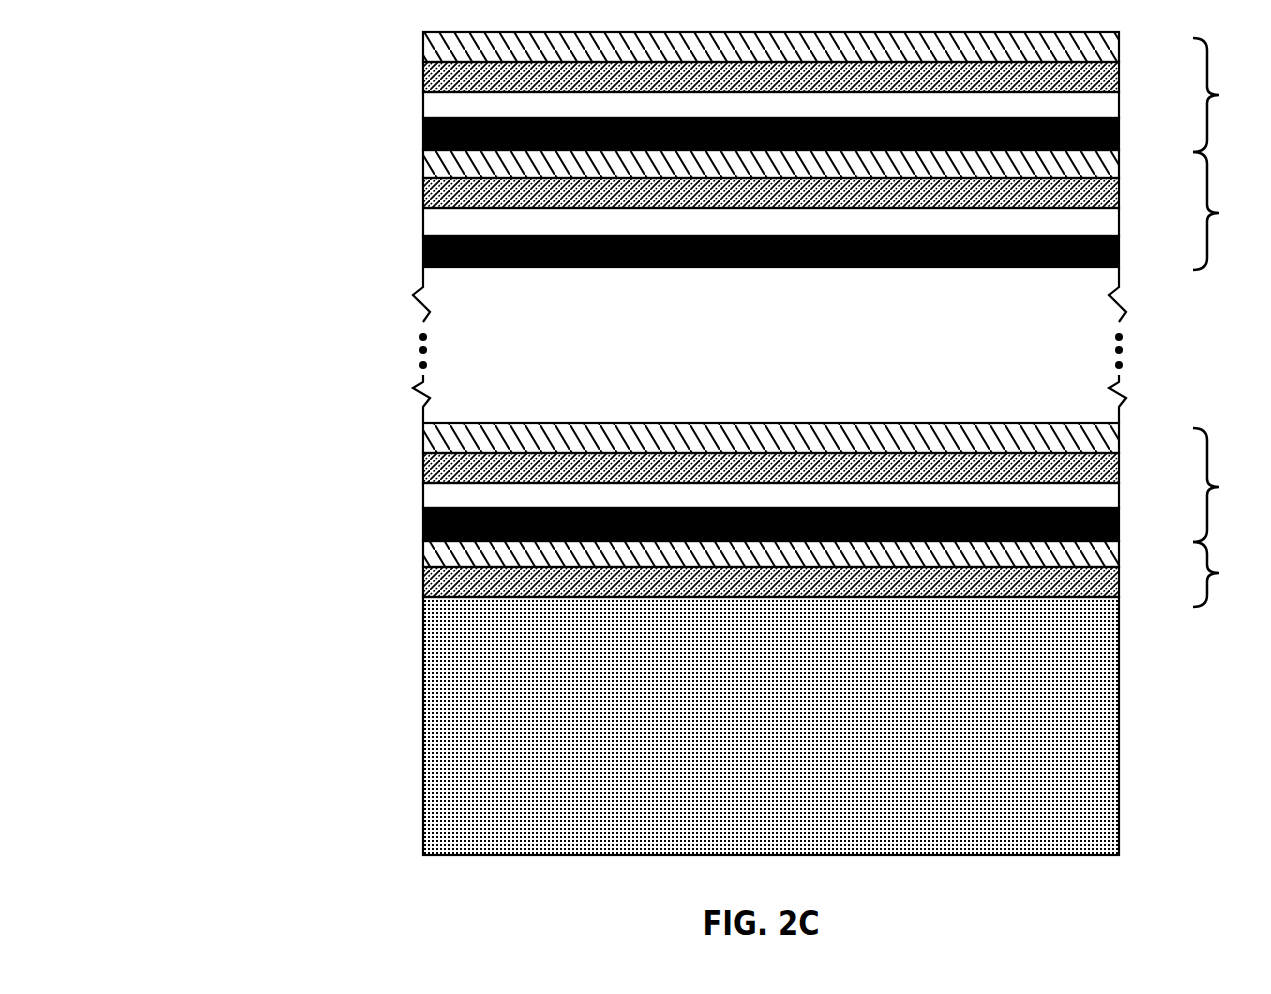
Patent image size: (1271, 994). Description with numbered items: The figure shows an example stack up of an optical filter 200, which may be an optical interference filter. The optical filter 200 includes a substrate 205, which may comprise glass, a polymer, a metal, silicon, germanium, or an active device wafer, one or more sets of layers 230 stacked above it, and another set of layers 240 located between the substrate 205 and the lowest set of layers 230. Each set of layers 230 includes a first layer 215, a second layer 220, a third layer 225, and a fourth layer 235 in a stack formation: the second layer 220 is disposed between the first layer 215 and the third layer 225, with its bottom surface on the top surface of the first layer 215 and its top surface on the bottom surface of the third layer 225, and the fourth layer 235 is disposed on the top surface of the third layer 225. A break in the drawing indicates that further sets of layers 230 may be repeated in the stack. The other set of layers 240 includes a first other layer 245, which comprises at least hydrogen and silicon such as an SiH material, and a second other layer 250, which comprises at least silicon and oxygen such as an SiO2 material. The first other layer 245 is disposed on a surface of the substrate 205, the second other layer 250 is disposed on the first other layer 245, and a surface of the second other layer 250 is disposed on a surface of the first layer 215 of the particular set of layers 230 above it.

The optical filter 200 is at (272, 41).
The substrate 205 is at (771, 726).
The first layer 215 is at (1120, 137).
The second layer 220 is at (432, 100).
The third layer 225 is at (1110, 76).
The set of layers 230 is at (1228, 290).
The fourth layer 235 is at (432, 43).
The other set of layers 240 is at (1228, 574).
The first other layer 245 is at (1110, 583).
The second other layer 250 is at (432, 550).